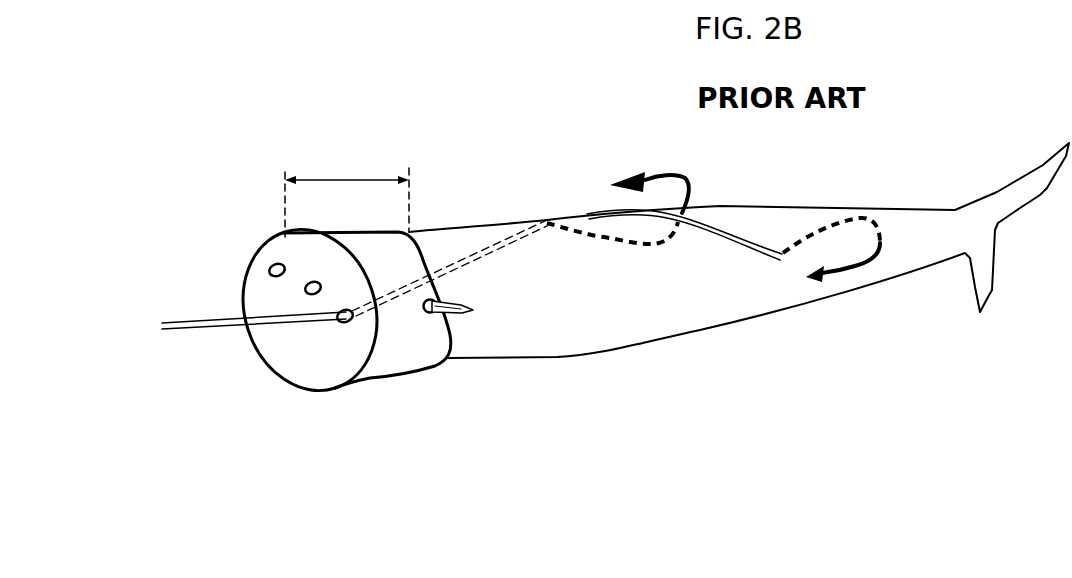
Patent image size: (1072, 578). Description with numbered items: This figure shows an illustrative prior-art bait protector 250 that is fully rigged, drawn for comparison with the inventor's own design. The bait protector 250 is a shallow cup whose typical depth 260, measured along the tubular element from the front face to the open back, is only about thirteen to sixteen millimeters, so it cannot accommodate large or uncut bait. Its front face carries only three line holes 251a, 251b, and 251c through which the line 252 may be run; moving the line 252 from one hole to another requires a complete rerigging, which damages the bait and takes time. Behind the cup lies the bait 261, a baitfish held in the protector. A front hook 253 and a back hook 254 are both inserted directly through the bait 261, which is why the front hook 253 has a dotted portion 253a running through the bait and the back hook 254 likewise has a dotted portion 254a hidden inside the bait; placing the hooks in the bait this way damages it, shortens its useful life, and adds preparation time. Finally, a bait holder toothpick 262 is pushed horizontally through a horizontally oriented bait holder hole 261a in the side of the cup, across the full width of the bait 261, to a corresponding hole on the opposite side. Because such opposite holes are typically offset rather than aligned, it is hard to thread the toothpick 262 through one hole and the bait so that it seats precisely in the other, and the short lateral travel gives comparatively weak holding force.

The bait protector 250 is at (382, 393).
The line hole 251a is at (276, 263).
The line hole 251b is at (305, 289).
The line hole 251c is at (346, 324).
The line 252 is at (192, 328).
The front hook 253 is at (677, 173).
The dotted portion of front hook 253a is at (625, 245).
The back hook 254 is at (857, 267).
The dotted portion of back hook 254a is at (857, 220).
The depth 260 is at (355, 178).
The bait 261 is at (777, 218).
The bait holder hole 261a is at (429, 316).
The bait holder toothpick 262 is at (458, 315).